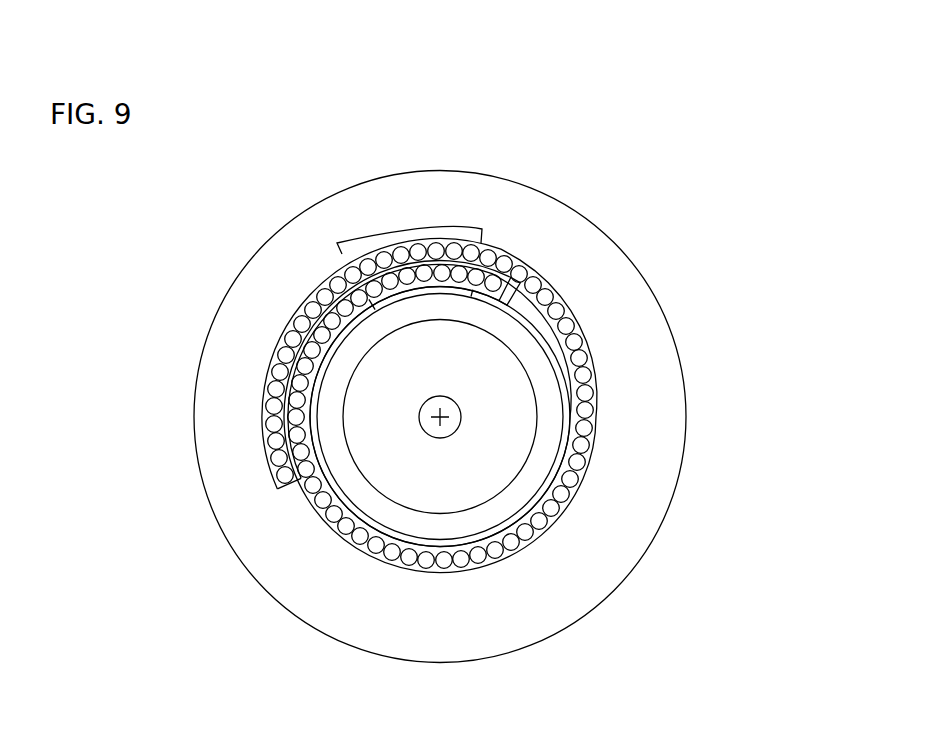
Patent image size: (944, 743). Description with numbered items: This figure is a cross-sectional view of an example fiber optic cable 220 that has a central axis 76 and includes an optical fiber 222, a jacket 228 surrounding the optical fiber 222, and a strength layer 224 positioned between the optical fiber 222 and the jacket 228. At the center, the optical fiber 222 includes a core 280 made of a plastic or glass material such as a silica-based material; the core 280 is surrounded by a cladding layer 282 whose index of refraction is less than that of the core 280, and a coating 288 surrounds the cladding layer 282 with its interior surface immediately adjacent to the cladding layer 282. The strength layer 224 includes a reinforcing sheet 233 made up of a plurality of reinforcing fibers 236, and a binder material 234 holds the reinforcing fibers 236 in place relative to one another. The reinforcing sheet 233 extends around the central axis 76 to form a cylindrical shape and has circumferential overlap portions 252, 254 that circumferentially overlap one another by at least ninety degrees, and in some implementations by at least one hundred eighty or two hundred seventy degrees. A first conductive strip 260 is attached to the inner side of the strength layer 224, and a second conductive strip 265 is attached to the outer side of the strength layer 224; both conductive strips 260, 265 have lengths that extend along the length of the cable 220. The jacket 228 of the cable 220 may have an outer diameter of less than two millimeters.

The cable 220 is at (183, 383).
The jacket 228 is at (337, 193).
The strength layer 224 is at (570, 546).
The reinforcing fibers 236 is at (515, 250).
The coating 288 is at (563, 325).
The second conductive strip 265 is at (430, 226).
The circumferential overlap portion 254 is at (270, 451).
The circumferential overlap portion 252 is at (263, 428).
The binder material 234 is at (325, 525).
The reinforcing sheet 233 is at (371, 568).
The first conductive strip 260 is at (423, 293).
The optical fiber 222 is at (567, 440).
The cladding layer 282 is at (530, 398).
The central axis 76 is at (442, 412).
The core 280 is at (449, 434).